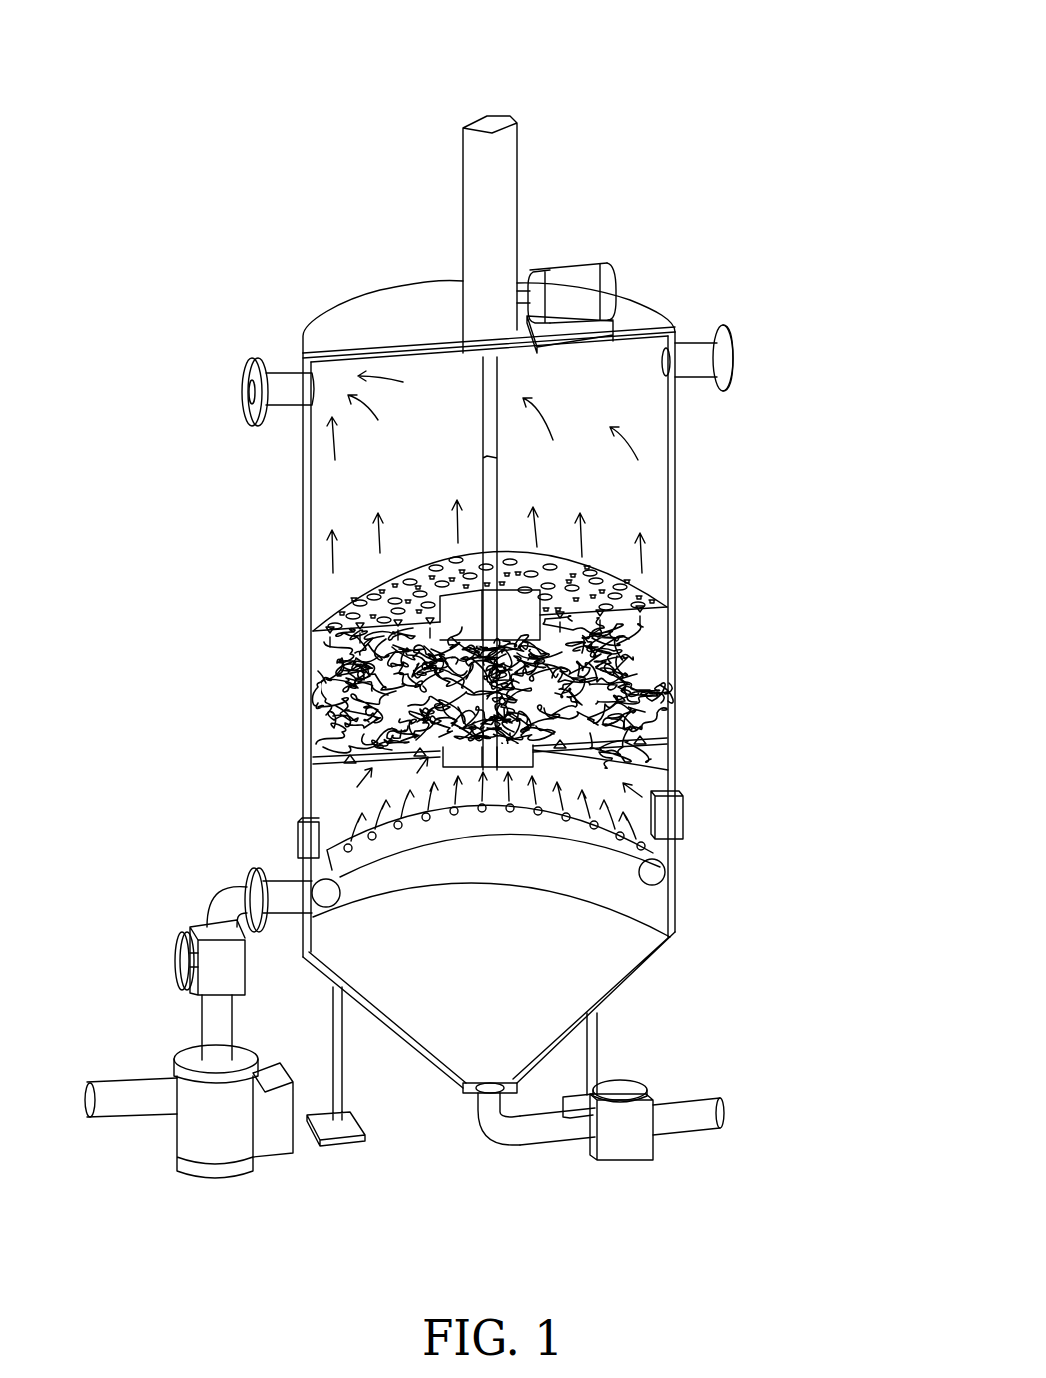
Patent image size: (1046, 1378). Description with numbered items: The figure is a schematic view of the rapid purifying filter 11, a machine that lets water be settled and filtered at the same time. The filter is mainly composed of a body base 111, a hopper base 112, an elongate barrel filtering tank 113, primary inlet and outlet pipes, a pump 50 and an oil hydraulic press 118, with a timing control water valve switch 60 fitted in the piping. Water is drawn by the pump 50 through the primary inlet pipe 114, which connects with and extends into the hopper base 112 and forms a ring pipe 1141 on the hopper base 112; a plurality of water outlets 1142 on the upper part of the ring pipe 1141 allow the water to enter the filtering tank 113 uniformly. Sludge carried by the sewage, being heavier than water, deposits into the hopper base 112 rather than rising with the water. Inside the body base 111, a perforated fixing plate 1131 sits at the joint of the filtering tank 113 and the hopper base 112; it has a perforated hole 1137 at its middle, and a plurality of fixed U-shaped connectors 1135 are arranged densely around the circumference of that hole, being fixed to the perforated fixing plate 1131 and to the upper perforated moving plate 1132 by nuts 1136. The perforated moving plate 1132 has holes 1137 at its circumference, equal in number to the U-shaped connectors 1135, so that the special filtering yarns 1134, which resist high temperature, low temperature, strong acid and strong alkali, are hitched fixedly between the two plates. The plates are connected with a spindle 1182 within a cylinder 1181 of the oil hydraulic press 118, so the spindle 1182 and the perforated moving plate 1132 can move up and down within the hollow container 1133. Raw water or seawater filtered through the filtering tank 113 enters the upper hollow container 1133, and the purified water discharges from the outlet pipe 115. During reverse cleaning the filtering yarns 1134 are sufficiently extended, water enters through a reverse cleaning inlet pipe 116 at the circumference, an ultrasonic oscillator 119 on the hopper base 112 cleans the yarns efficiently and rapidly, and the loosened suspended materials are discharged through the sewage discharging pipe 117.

The rapid purifying filter 11 is at (425, 98).
The body base 111 is at (347, 298).
The hopper base 112 is at (443, 1015).
The filtering tank 113 is at (321, 640).
The perforated fixing plate 1131 is at (660, 735).
The perforated moving plate 1132 is at (667, 612).
The hollow container 1133 is at (325, 515).
The special filtering yarns 1134 is at (330, 722).
The U-shaped connectors 1135 is at (660, 700).
The nuts 1136 is at (661, 607).
The perforated hole 1137 is at (605, 560).
The primary inlet pipe 114 is at (245, 880).
The ring pipe 1141 is at (655, 878).
The water outlets 1142 is at (655, 845).
The outlet pipe 115 is at (247, 385).
The reverse cleaning inlet pipe 116 is at (737, 345).
The sewage discharging pipe 117 is at (475, 1108).
The oil hydraulic press 118 is at (510, 175).
The cylinder 1181 is at (508, 253).
The spindle 1182 is at (490, 392).
The ultrasonic oscillator 119 is at (305, 835).
The pump 50 is at (173, 1073).
The timing control water valve switch 60 is at (172, 962).